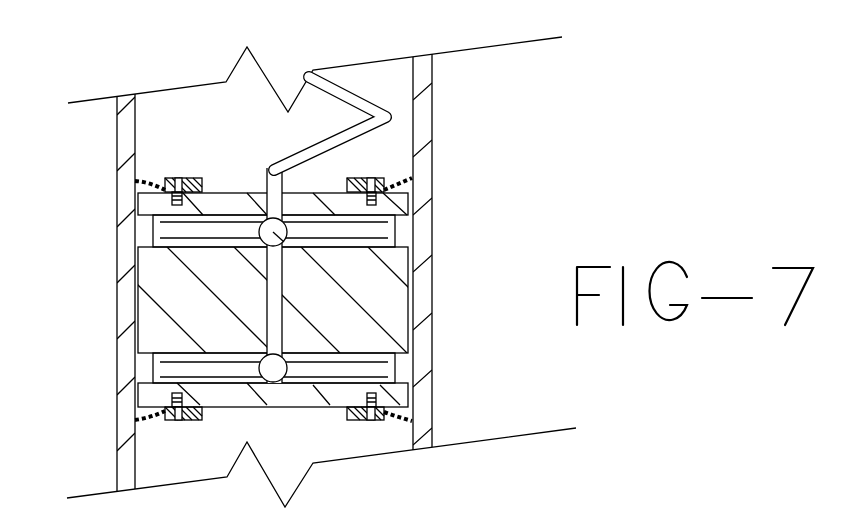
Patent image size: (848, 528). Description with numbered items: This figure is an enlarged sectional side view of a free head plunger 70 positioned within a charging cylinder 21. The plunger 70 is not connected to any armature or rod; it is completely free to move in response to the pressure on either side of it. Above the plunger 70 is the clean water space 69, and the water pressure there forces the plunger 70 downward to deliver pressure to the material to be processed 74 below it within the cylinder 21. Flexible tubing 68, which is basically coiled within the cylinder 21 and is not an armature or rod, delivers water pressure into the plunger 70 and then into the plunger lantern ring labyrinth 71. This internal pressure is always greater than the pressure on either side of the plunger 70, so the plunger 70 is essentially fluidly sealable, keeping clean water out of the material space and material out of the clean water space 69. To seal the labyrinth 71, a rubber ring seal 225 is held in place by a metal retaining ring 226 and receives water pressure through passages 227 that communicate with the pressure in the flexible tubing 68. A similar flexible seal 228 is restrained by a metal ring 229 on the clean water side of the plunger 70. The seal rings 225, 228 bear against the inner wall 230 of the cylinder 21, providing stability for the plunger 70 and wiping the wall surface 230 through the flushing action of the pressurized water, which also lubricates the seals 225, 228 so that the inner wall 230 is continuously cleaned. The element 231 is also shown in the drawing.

The charging cylinder 21 is at (117, 210).
The flexible tubing 68 is at (352, 90).
The water space 69 is at (217, 128).
The free head plunger 70 is at (665, 187).
The plunger lantern ring labyrinth 71 is at (398, 369).
The material to be processed 74 is at (298, 492).
The rubber ring seal 225 is at (140, 417).
The metal retaining ring 226 is at (175, 418).
The passages 227 is at (292, 242).
The flexible seal 228 is at (403, 182).
The metal ring 229 is at (357, 177).
The inner wall 230 is at (405, 72).
The lower right seal 231 is at (404, 425).